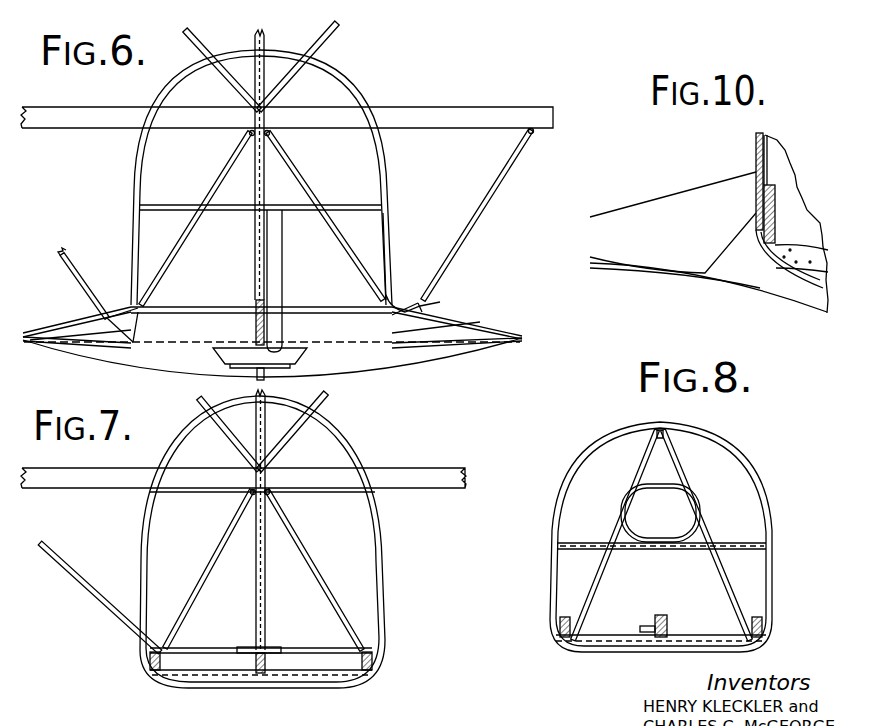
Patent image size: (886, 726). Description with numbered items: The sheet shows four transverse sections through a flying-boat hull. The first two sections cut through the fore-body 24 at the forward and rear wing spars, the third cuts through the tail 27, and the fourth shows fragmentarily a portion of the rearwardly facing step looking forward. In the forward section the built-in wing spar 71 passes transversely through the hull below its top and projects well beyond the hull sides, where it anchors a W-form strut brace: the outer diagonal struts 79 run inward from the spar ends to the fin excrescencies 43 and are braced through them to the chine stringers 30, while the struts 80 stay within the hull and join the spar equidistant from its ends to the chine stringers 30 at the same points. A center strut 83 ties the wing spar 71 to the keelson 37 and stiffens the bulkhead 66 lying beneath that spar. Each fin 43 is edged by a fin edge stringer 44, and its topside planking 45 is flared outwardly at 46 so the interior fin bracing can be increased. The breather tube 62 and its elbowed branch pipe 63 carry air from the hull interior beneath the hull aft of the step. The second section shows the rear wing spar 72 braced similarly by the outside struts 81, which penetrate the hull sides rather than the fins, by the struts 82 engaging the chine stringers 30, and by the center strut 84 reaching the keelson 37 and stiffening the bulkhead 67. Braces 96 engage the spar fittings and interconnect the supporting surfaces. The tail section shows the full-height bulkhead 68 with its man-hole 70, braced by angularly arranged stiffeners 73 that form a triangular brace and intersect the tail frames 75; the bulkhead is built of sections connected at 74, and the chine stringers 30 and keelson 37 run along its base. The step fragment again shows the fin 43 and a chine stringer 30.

In FIG. 6, the fore-body 24 is at (368, 80).
In FIG. 8, the tail 27 is at (542, 531).
In FIG. 7, the tail 27 is at (358, 428).
In FIG. 6, the chine stringers 30 is at (150, 300).
In FIG. 10, the chine stringers 30 is at (775, 200).
In FIG. 8, the chine stringers 30 is at (560, 625).
In FIG. 7, the chine stringers 30 is at (150, 661).
In FIG. 6, the keelson 37 is at (264, 327).
In FIG. 8, the keelson 37 is at (661, 618).
In FIG. 7, the keelson 37 is at (252, 658).
In FIG. 6, the fin excrescencies 43 is at (467, 352).
In FIG. 10, the fin excrescencies 43 is at (663, 200).
In FIG. 6, the fin edge stringers 44 is at (524, 338).
In FIG. 6, the topside planking 45 is at (478, 320).
In FIG. 6, the outward flare 46 is at (398, 300).
In FIG. 6, the breather tube 62 is at (284, 262).
In FIG. 6, the branch pipe 63 is at (238, 348).
In FIG. 6, the bulkhead 66 is at (375, 242).
In FIG. 7, the bulkhead 67 is at (360, 553).
In FIG. 8, the bulkhead 68 is at (615, 614).
In FIG. 8, the man-hole 70 is at (682, 500).
In FIG. 6, the forward wing spar 71 is at (512, 110).
In FIG. 7, the rear wing spar 72 is at (418, 470).
In FIG. 8, the stiffeners 73 is at (715, 530).
In FIG. 8, the bulkhead section connection 74 is at (752, 553).
In FIG. 8, the tail frames 75 is at (578, 467).
In FIG. 7, the tail frames 75 is at (382, 604).
In FIG. 6, the outer diagonal struts 79 is at (500, 178).
In FIG. 6, the struts 80 is at (300, 172).
In FIG. 7, the outside struts 81 is at (70, 572).
In FIG. 7, the struts 82 is at (222, 550).
In FIG. 6, the center strut 83 is at (257, 188).
In FIG. 7, the center strut 84 is at (266, 599).
In FIG. 6, the braces 96 is at (298, 26).